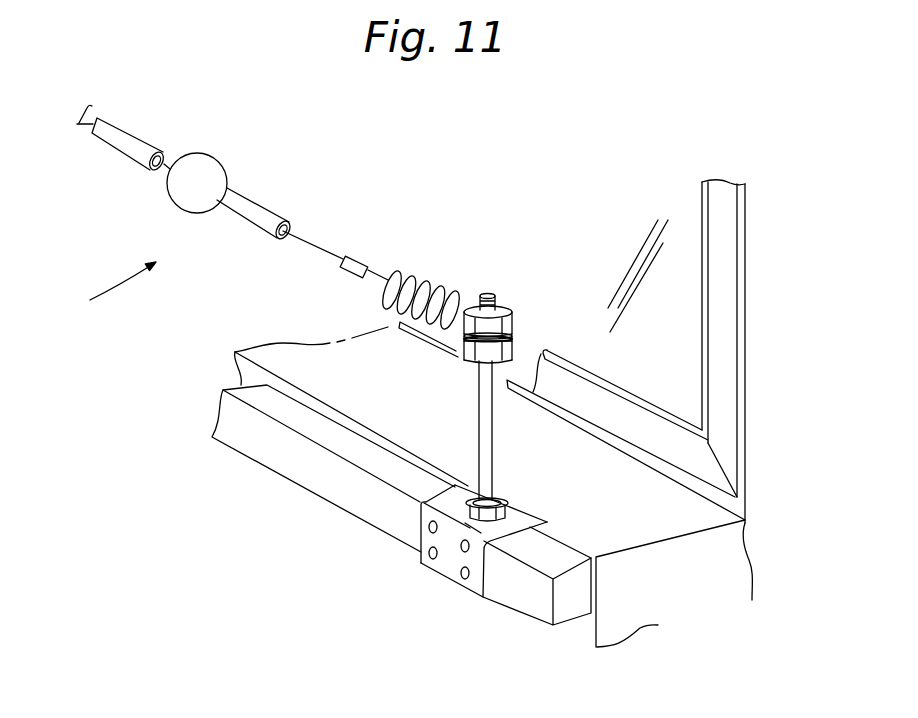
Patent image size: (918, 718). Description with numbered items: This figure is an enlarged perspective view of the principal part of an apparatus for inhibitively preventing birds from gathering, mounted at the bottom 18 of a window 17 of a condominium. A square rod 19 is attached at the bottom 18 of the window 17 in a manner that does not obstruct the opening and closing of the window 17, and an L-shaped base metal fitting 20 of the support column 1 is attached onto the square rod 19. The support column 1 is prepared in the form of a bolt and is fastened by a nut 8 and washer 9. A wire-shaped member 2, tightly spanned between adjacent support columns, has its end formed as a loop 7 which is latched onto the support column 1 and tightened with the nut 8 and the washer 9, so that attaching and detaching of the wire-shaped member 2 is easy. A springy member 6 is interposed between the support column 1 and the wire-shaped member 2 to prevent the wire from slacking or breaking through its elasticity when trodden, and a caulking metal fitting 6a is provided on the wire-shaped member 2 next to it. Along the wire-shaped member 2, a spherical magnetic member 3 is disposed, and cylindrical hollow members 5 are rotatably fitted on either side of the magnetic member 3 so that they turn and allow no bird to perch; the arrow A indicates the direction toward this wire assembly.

The support column 1 is at (488, 468).
The wire-shaped member 2 is at (322, 247).
The magnetic member 3 is at (188, 190).
The cylindrical hollow member 5 is at (133, 150).
The springy member 6 is at (412, 272).
The caulking metal fitting 6a is at (360, 258).
The loop 7 is at (513, 337).
The nut 8 is at (498, 298).
The washer 9 is at (513, 333).
The window 17 is at (683, 362).
The bottom of the window 18 is at (320, 382).
The square rod 19 is at (337, 495).
The L-shaped base metal fitting 20 is at (447, 567).
The direction of movement A is at (112, 290).